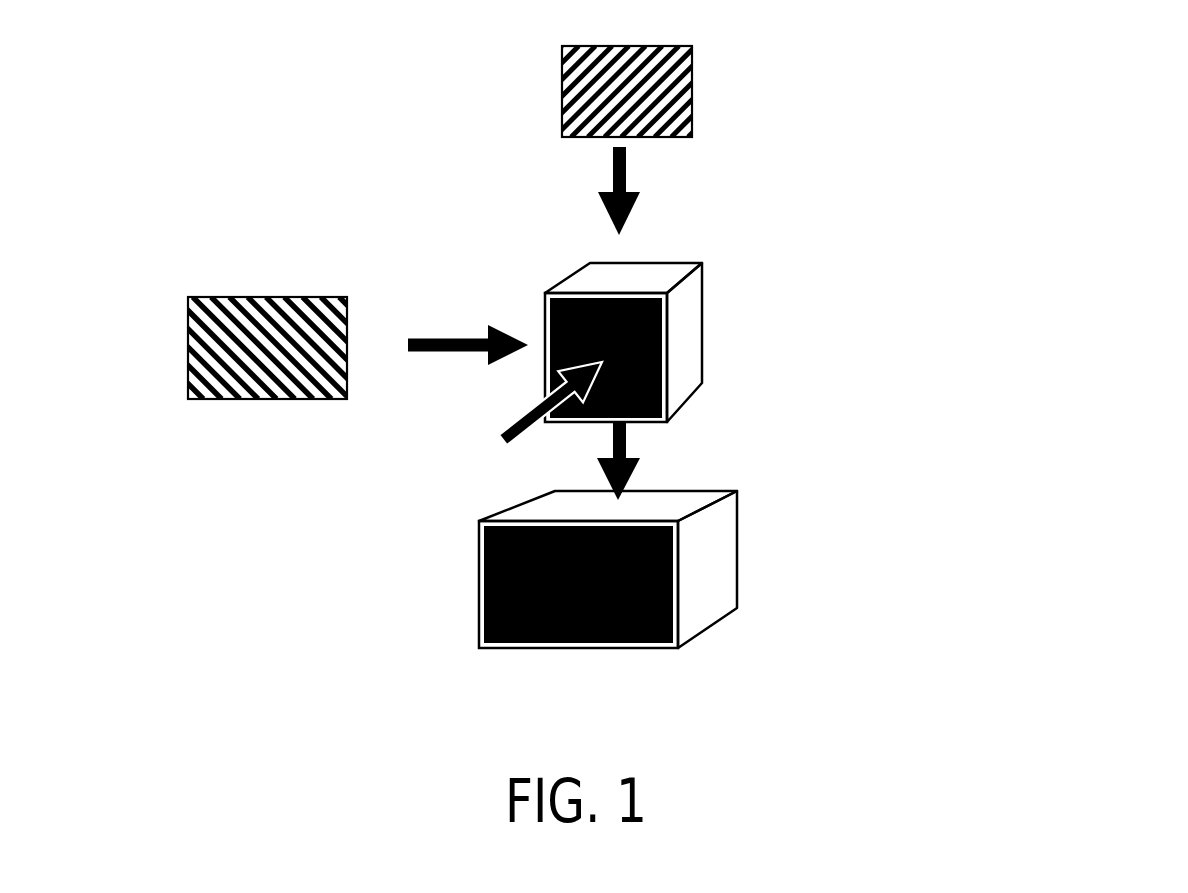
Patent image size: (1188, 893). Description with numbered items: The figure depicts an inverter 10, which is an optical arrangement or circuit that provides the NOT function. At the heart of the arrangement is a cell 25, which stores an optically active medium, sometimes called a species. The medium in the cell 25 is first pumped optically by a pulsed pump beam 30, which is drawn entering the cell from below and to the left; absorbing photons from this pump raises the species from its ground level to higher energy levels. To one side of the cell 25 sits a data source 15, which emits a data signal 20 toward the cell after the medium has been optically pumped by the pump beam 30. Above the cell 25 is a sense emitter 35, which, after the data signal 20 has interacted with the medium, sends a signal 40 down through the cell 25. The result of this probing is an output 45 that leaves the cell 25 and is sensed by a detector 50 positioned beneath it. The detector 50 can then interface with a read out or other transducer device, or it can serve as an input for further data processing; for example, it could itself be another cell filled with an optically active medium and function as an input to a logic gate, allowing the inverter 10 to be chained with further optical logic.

The inverter 10 is at (973, 116).
The data source 15 is at (188, 355).
The data signal 20 is at (475, 337).
The cell 25 is at (683, 332).
The pulsed pump beam 30 is at (502, 437).
The sense emitter 35 is at (623, 46).
The signal 40 is at (627, 180).
The output 45 is at (635, 472).
The detector 50 is at (615, 648).